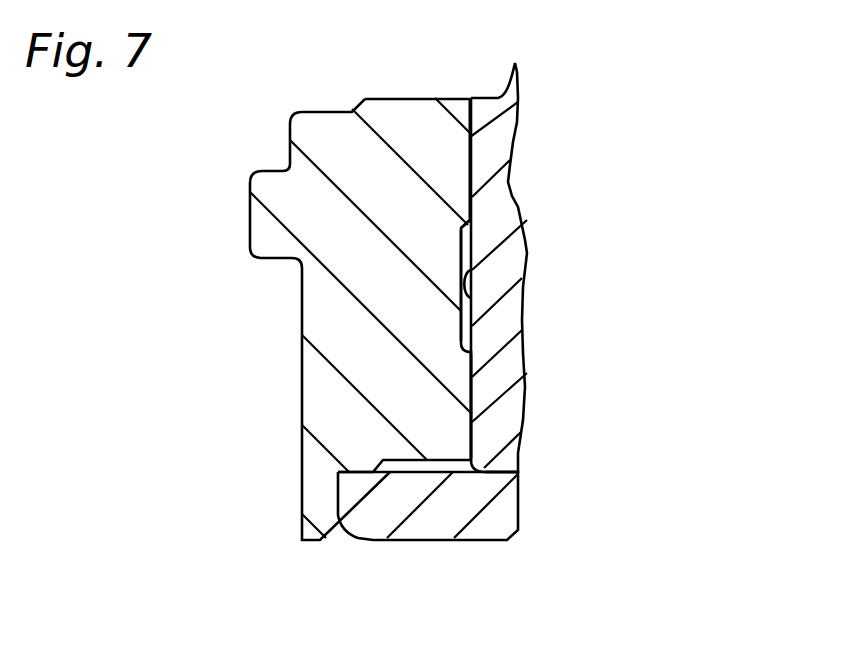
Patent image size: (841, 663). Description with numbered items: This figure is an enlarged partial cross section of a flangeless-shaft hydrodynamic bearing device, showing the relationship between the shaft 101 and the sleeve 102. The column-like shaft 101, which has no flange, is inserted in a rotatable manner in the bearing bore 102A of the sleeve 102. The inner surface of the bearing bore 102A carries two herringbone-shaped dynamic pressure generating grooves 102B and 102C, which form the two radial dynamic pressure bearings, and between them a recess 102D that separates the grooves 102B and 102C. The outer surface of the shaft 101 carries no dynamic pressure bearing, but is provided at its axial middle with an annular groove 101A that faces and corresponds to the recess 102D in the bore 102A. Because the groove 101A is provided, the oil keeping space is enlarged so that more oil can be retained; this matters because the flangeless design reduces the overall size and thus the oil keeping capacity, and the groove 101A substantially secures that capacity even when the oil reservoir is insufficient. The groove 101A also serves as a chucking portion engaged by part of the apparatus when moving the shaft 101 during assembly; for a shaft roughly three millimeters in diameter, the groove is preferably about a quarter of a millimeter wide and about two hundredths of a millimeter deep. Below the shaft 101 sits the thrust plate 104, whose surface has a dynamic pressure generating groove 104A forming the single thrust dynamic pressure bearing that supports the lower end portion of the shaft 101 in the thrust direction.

The shaft 101 is at (500, 177).
The annular groove 101A is at (472, 270).
The sleeve 102 is at (406, 140).
The bearing bore 102A is at (473, 200).
The dynamic pressure generating groove 102B is at (471, 133).
The dynamic pressure generating groove 102C is at (473, 393).
The recess 102D is at (462, 320).
The thrust plate 104 is at (455, 510).
The dynamic pressure generating groove 104A is at (501, 469).